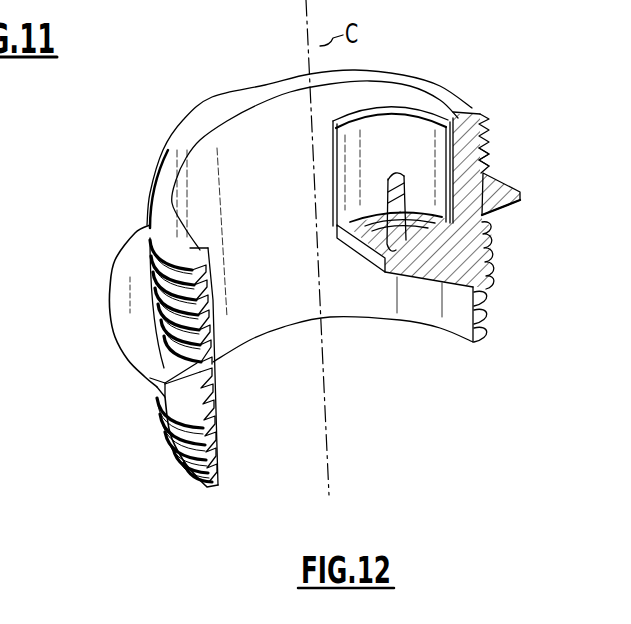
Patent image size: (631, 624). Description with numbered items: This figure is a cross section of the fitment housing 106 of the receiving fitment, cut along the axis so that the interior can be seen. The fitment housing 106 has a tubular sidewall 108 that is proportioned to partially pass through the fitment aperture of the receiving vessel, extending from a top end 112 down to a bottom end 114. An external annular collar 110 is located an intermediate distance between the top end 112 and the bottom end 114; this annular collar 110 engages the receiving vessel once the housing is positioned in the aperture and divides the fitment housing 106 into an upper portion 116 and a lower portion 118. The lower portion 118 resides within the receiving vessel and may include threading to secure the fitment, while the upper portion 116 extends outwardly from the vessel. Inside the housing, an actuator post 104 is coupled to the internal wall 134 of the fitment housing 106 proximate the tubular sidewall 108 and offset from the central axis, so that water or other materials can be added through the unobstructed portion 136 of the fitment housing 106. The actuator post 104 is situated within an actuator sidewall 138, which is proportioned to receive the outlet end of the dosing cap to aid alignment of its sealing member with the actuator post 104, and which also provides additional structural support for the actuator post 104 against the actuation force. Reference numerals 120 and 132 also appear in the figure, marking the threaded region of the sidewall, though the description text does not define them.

The actuator post 104 is at (396, 251).
The fitment housing 106 is at (90, 437).
The tubular sidewall 108 is at (215, 463).
The external annular collar 110 is at (502, 197).
The top end 112 is at (265, 86).
The bottom end 114 is at (477, 343).
The upper portion 116 is at (482, 133).
The lower portion 118 is at (497, 303).
The thread portion below flange 120 is at (489, 264).
The thread crest 132 is at (484, 162).
The internal wall 134 is at (436, 107).
The unobstructed portion 136 is at (236, 145).
The actuator sidewall 138 is at (387, 102).